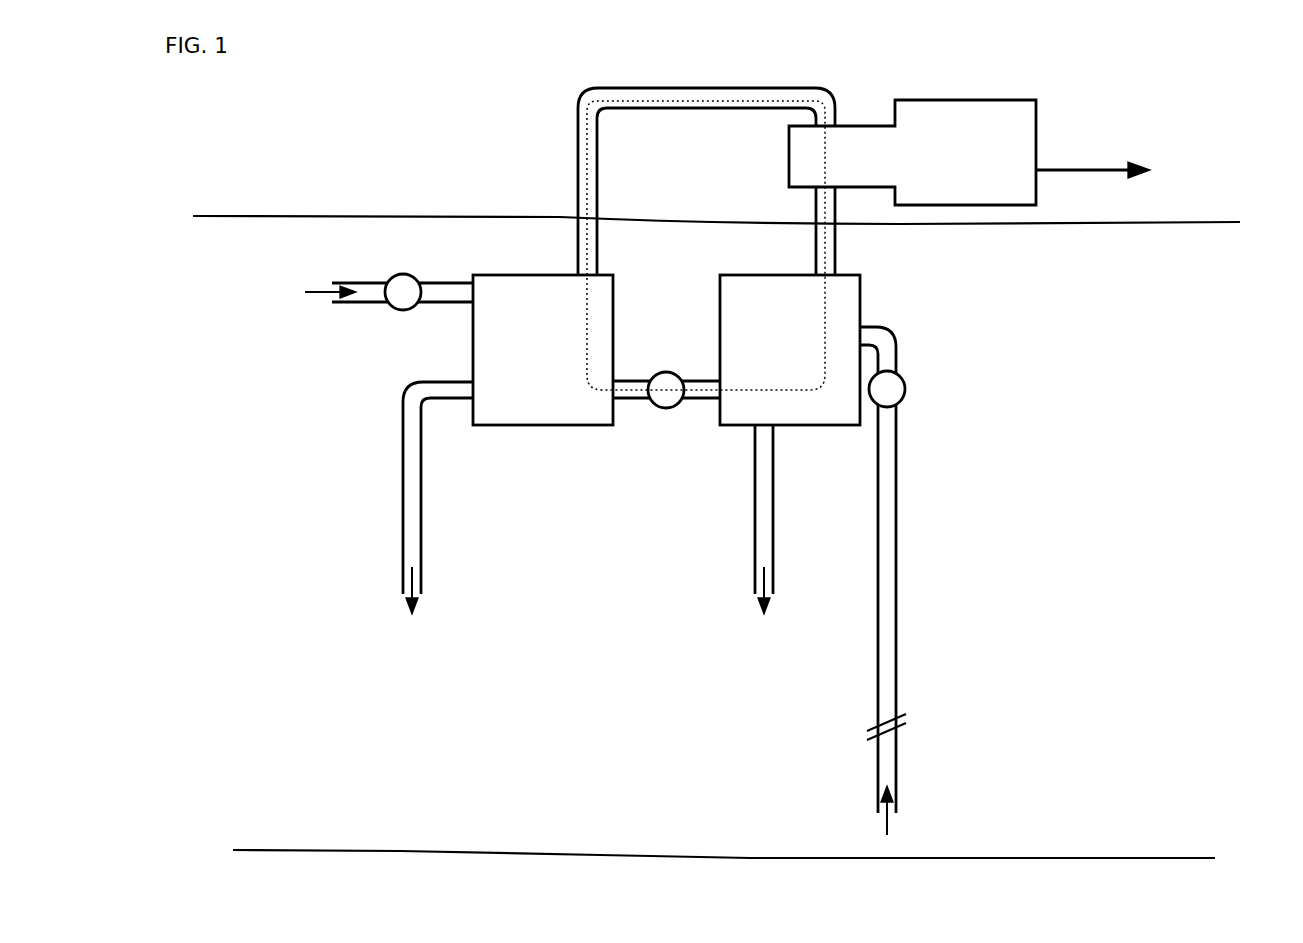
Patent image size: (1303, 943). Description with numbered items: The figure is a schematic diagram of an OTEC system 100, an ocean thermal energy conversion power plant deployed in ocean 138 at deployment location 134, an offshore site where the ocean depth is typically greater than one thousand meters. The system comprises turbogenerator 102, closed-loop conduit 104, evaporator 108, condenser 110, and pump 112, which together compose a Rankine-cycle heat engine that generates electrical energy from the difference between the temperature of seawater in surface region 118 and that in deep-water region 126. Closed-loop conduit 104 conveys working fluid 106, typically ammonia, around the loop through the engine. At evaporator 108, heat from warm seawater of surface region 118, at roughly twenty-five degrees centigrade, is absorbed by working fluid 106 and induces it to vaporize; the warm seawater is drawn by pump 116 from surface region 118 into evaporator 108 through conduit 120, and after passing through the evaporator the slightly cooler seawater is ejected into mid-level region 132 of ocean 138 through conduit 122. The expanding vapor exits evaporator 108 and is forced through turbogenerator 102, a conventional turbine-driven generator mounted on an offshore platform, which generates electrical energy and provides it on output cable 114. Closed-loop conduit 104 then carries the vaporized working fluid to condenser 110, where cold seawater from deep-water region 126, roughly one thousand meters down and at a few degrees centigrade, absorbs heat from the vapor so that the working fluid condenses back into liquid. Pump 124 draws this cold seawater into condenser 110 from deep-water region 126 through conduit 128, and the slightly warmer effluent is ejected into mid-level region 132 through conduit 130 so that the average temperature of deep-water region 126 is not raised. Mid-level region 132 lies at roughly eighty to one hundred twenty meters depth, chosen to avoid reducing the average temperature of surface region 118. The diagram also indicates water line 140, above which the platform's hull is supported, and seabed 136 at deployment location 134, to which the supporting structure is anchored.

The OTEC system 100 is at (292, 105).
The turbogenerator 102 is at (978, 100).
The closed-loop conduit 104 is at (578, 196).
The working fluid 106 is at (589, 135).
The evaporator 108 is at (541, 357).
The condenser 110 is at (806, 357).
The pump 112 is at (664, 372).
The output cable 114 is at (1078, 168).
The pump 116 is at (402, 274).
The surface region 118 is at (337, 253).
The conduit 120 is at (350, 305).
The conduit 122 is at (403, 488).
The pump 124 is at (905, 390).
The deep-water region 126 is at (1215, 817).
The conduit 128 is at (896, 760).
The conduit 130 is at (755, 486).
The mid-level region 132 is at (655, 586).
The deployment location 134 is at (772, 779).
The seabed 136 is at (1197, 896).
The ocean 138 is at (1210, 497).
The water line 140 is at (1070, 226).